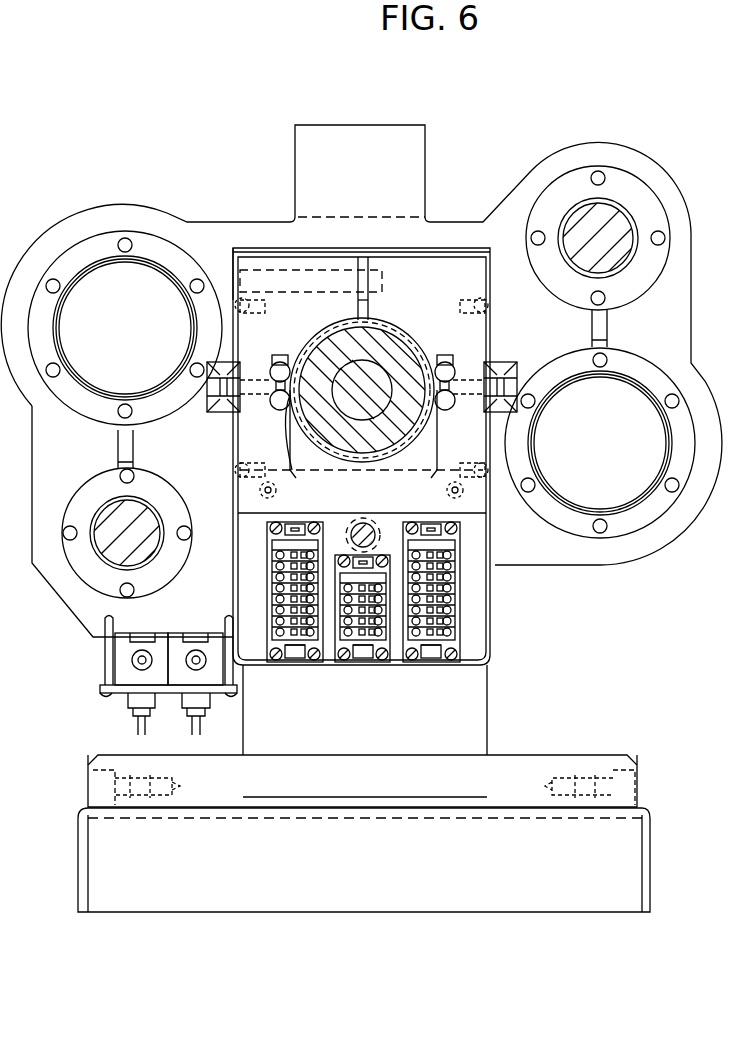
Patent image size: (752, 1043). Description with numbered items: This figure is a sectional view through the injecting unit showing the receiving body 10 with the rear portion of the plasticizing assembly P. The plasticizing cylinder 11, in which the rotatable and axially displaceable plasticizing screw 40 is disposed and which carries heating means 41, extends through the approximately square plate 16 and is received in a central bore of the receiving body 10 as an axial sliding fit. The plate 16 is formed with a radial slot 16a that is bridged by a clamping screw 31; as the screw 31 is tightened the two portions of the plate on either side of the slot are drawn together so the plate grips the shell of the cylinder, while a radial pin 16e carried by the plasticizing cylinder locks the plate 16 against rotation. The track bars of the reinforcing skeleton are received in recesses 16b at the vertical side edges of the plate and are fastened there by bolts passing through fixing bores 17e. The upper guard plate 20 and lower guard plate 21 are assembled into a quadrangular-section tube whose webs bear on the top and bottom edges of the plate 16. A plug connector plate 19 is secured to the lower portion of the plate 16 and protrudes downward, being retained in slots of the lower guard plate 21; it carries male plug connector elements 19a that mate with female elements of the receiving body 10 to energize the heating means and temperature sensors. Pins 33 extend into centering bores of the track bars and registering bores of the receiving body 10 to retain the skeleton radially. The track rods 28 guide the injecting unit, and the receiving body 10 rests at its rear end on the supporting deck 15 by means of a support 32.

The receiving body 10 is at (668, 552).
The plasticizing cylinder 11 is at (316, 355).
The supporting deck 15 is at (365, 877).
The plate 16 is at (470, 275).
The radial slot 16a is at (360, 262).
The recess 16b is at (490, 348).
The radial pin 16e is at (368, 305).
The fixing bores 17e is at (250, 370).
The plug connector plate 19 is at (252, 630).
The male plug connector elements 19a is at (420, 640).
The upper guard plate 20 is at (444, 247).
The lower guard plate 21 is at (495, 628).
The track rods 28 is at (620, 233).
The clamping screw 31 is at (238, 252).
The support 32 is at (548, 753).
The pins 33 is at (207, 374).
The plasticizing screw 40 is at (352, 380).
The heating means 41 is at (300, 452).
The plasticizing assembly P is at (408, 246).